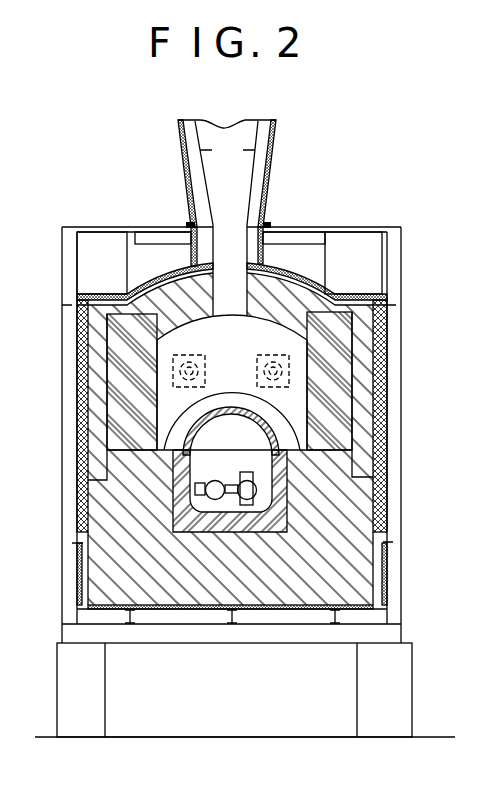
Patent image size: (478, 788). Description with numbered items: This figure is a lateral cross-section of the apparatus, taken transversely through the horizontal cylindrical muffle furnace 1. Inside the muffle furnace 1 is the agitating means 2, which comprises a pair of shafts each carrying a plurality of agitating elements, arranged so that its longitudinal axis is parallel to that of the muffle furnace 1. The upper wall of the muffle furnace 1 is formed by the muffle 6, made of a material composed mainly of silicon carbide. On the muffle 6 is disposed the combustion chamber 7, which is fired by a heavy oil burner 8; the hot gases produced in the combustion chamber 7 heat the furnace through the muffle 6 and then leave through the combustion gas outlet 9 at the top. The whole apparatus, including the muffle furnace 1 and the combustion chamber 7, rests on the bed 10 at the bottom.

The muffle furnace 1 is at (240, 437).
The agitating means 2 is at (257, 490).
The muffle 6 is at (230, 409).
The combustion chamber 7 is at (238, 330).
The heavy oil burner 8 is at (325, 289).
The combustion gas outlet 9 is at (248, 172).
The bed 10 is at (357, 702).